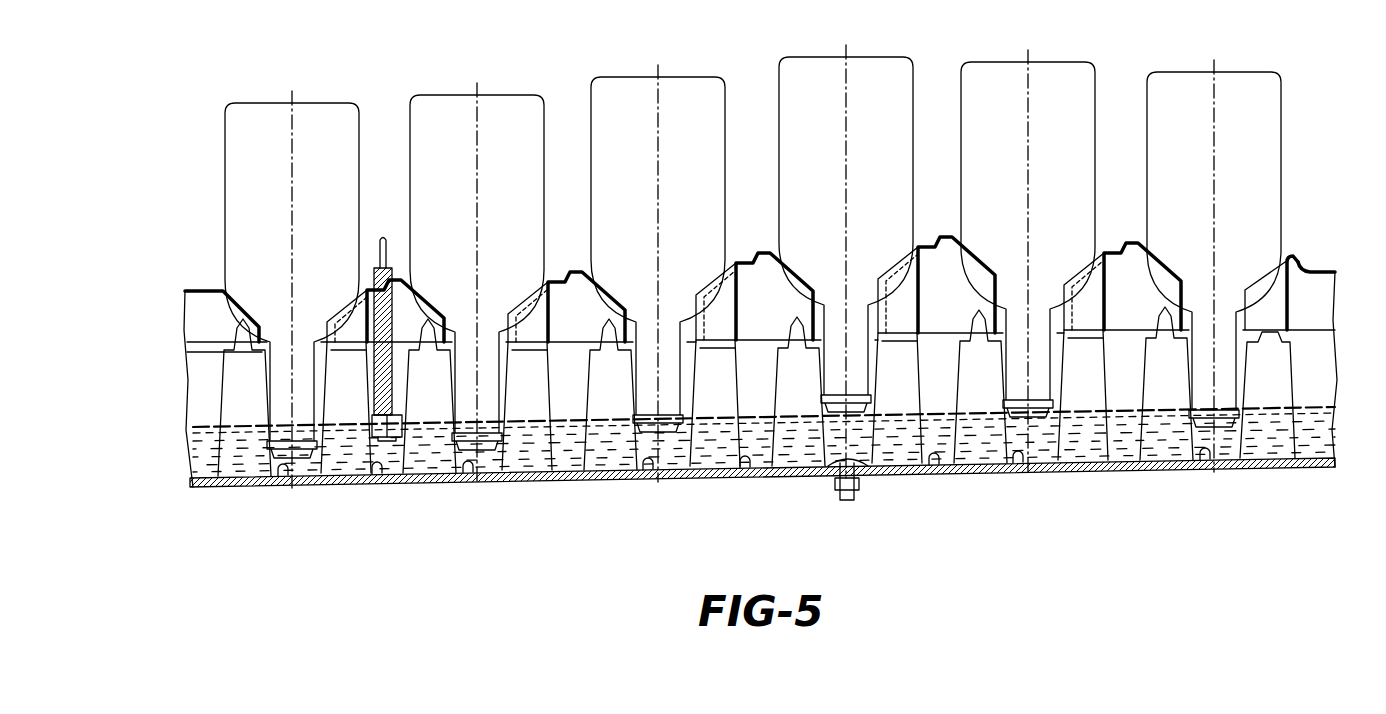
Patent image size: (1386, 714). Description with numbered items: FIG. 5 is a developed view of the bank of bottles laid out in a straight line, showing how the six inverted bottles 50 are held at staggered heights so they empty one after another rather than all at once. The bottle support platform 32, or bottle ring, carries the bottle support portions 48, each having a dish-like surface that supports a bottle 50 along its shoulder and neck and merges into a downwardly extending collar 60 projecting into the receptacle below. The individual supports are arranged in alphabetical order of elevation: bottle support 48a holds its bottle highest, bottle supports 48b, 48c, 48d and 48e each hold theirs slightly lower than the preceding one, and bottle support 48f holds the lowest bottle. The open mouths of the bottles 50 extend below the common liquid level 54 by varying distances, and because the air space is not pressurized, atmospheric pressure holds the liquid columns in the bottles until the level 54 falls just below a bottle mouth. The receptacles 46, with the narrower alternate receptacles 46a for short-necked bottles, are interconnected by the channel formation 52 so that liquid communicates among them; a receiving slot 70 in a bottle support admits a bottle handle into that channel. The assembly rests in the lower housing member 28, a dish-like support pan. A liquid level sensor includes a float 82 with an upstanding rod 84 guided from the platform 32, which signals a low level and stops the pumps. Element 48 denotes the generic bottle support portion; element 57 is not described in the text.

The bottle 50 is at (266, 176).
The bottle support 48a is at (788, 245).
The bottle support 48b is at (968, 250).
The bottle support 48c is at (596, 272).
The bottle support 48d is at (1158, 250).
The bottle support 48e is at (413, 272).
The bottle support 48f is at (236, 285).
The collar 60 is at (259, 345).
The receiving slot 70 is at (538, 362).
The channel formation 52 is at (242, 413).
The float rod 84 is at (379, 256).
The float 82 is at (401, 420).
The bottle support platform 32 is at (1340, 270).
The liquid level 54 is at (1306, 405).
The lower housing member 28 is at (597, 490).
The receptacle 46 is at (282, 485).
The receptacle 46a is at (377, 484).
The drain fitting cap 57 is at (834, 467).
The bottle support portion 48 is at (852, 498).